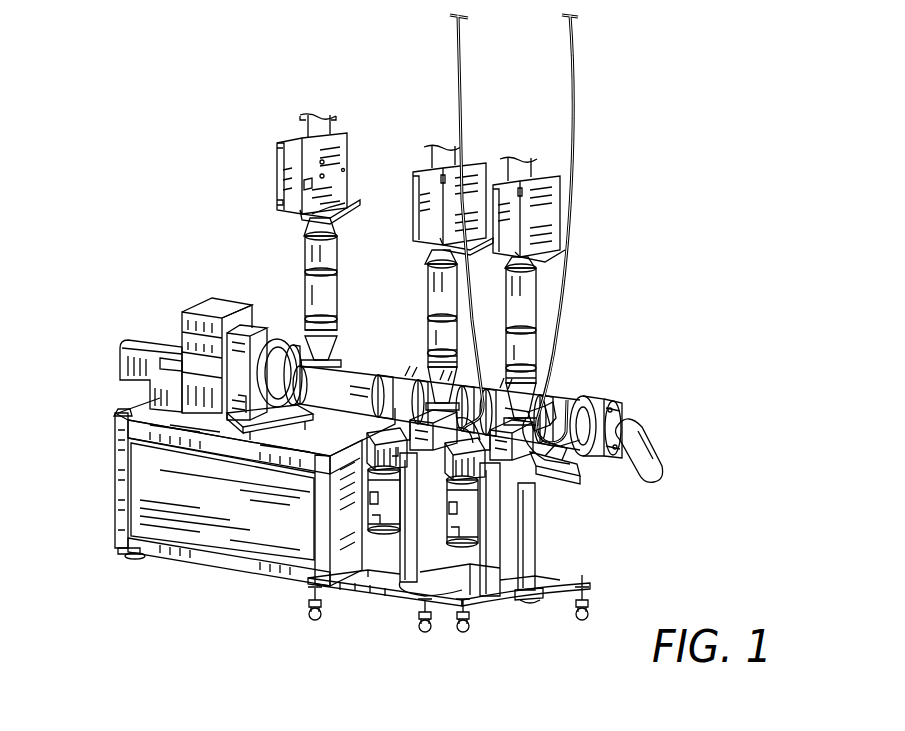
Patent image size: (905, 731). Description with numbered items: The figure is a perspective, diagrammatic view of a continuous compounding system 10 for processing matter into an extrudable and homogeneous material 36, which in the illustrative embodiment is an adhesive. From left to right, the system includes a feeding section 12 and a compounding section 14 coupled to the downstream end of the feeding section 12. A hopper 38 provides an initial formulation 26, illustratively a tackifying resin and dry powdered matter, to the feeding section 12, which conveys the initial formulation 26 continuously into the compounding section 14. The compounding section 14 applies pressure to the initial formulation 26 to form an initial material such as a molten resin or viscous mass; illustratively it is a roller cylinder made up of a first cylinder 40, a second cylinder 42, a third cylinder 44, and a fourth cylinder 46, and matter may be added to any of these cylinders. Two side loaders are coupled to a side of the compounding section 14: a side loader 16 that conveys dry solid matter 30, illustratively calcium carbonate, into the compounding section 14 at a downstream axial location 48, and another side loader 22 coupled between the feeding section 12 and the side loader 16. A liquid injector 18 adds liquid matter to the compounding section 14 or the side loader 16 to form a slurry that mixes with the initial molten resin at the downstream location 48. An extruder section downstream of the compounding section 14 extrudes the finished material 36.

The continuous compounding system 10 is at (165, 68).
The feeding section 12 is at (298, 345).
The compounding section 14 is at (418, 366).
The side loader 16 is at (302, 619).
The liquid injector 18 is at (545, 414).
The side loader 22 is at (315, 466).
The initial formulation 26 is at (318, 105).
The dry solid matter 30 is at (522, 155).
The material 36 is at (664, 463).
The hopper 38 is at (270, 176).
The first cylinder 40 is at (402, 378).
The second cylinder 42 is at (483, 415).
The third cylinder 44 is at (533, 412).
The fourth cylinder 46 is at (571, 472).
The downstream location 48 is at (533, 486).